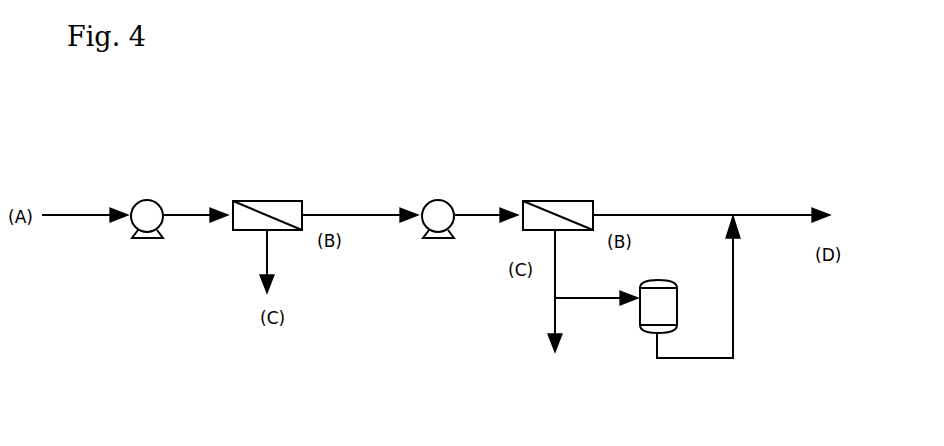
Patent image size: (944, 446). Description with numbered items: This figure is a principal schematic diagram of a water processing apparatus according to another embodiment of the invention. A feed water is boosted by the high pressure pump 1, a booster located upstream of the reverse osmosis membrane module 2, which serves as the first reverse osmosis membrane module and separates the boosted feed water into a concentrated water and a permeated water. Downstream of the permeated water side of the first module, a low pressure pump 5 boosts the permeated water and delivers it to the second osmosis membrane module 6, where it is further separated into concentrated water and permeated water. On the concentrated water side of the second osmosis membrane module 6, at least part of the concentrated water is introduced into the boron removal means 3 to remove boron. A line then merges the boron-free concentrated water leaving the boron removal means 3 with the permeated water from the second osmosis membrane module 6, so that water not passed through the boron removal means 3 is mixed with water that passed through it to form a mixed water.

The high pressure pump 1 is at (153, 198).
The reverse osmosis membrane module 2 is at (257, 200).
The low pressure pump 5 is at (446, 198).
The second osmosis membrane module 6 is at (547, 200).
The boron removal means 3 is at (642, 333).